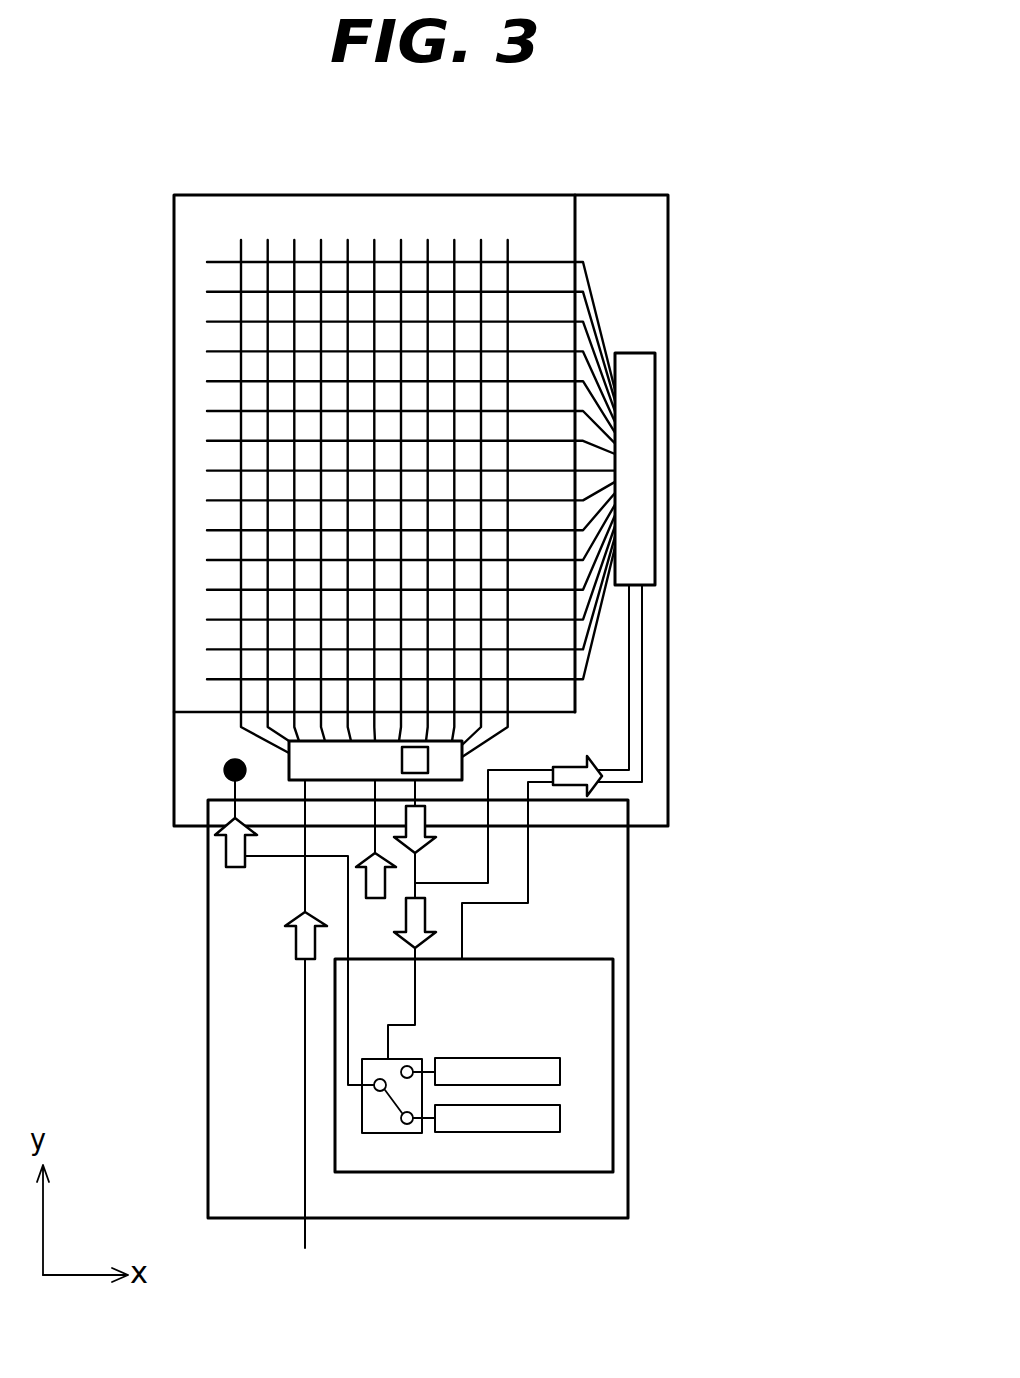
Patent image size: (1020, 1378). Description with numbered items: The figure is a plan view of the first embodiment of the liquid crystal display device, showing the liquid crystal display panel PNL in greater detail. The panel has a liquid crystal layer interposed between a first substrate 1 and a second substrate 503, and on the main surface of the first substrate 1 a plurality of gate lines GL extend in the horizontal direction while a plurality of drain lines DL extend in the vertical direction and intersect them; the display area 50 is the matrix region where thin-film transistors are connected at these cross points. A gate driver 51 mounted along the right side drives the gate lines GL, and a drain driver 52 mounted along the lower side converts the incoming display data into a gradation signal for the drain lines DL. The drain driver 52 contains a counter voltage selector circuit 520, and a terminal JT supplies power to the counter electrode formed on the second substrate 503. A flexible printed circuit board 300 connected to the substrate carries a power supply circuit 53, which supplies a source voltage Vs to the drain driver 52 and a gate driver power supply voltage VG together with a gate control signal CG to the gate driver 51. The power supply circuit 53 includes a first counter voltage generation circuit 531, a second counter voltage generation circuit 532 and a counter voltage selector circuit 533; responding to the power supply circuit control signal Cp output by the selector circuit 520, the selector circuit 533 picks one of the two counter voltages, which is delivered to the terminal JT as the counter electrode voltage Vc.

The first substrate 1 is at (668, 240).
The liquid crystal display panel PNL is at (396, 510).
The display area 50 is at (356, 434).
The drain line DL is at (292, 248).
The gate line GL is at (218, 412).
The second substrate 503 is at (575, 225).
The gate driver 51 is at (640, 450).
The gate driver power supply voltage VG is at (642, 610).
The gate control signal CG is at (629, 672).
The drain driver 52 is at (419, 745).
The counter voltage selector circuit 520 is at (428, 760).
The power supply terminal JT is at (224, 770).
The counter electrode voltage Vc is at (226, 848).
The source voltage Vs is at (366, 882).
The power supply circuit control signal Cp is at (425, 920).
The power supply circuit 53 is at (523, 1120).
The flexible printed circuit board 300 is at (628, 1042).
The first counter voltage generation circuit 531 is at (560, 1072).
The second counter voltage generation circuit 532 is at (560, 1118).
The counter voltage selector circuit 533 is at (385, 1133).